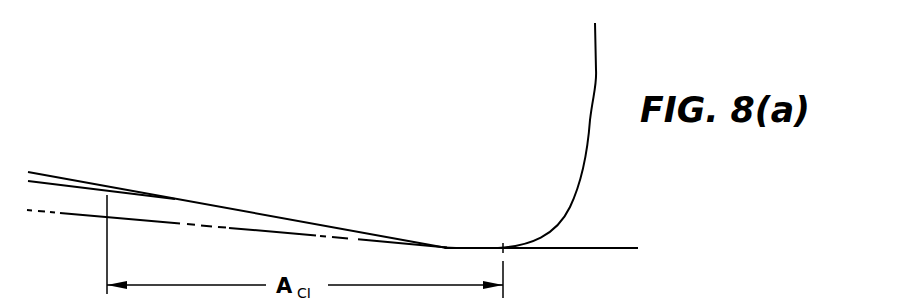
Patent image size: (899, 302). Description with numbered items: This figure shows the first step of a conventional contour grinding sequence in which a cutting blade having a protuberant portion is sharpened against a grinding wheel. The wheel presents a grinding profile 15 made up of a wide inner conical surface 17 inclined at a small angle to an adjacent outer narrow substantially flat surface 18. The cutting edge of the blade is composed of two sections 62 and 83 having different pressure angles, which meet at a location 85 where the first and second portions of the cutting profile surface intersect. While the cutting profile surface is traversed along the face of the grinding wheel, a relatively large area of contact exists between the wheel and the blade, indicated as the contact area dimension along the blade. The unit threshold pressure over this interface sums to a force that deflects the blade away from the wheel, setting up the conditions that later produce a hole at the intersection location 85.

The grinding profile 15 is at (307, 218).
The inner conical surface 17 is at (204, 205).
The outer narrow substantially flat surface 18 is at (481, 244).
The cutting edge section 62 is at (598, 248).
The cutting edge section 83 is at (73, 216).
The location of intersection of first and second portions of the cutting profile sur 85 is at (455, 250).